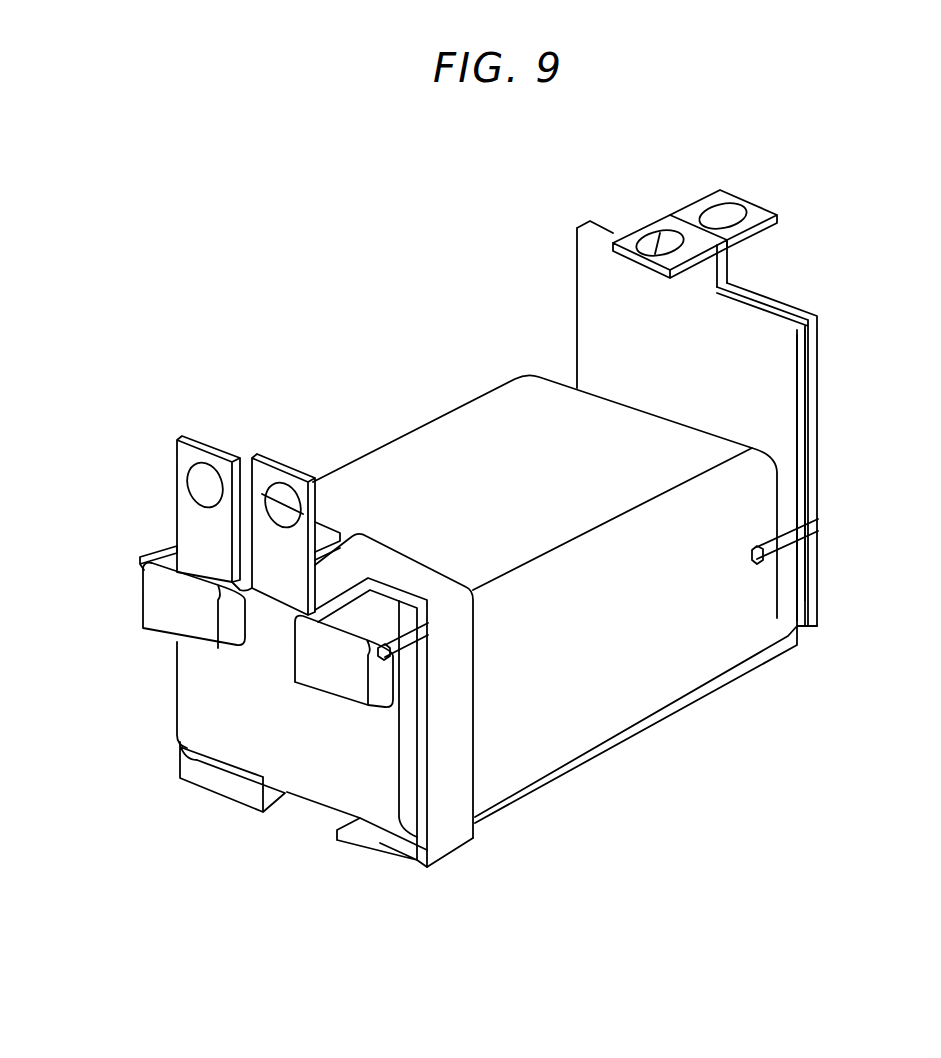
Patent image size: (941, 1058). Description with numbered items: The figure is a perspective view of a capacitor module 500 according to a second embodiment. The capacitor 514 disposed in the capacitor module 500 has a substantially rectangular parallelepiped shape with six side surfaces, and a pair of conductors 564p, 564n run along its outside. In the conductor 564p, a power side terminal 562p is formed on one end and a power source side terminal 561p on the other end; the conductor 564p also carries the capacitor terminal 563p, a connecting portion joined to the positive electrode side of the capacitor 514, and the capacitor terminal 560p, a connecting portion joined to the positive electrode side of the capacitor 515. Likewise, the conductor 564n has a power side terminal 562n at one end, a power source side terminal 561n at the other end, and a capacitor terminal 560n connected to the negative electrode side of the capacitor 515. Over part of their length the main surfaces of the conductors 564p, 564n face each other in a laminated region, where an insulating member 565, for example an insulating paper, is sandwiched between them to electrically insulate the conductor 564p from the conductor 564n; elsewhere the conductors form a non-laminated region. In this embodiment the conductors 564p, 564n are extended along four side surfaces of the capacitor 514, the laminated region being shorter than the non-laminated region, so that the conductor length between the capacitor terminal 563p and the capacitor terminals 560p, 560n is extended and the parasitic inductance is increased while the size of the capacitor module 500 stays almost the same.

The capacitor module 500 is at (393, 246).
The capacitor 514 is at (620, 715).
The capacitor 515 is at (320, 653).
The capacitor terminal 560n is at (167, 557).
The capacitor terminal 560p is at (410, 648).
The power source side terminal 561n is at (187, 457).
The power source side terminal 561p is at (263, 480).
The power side terminal 562n is at (655, 228).
The power side terminal 562p is at (752, 212).
The capacitor terminal 563p is at (812, 562).
The conductor 564n is at (797, 413).
The conductor 564p is at (810, 336).
The insulating member 565 is at (808, 393).